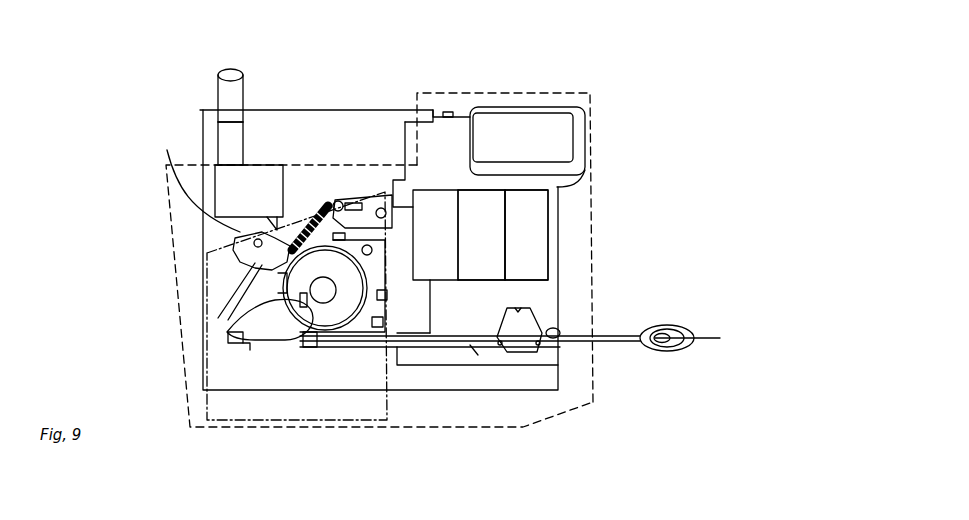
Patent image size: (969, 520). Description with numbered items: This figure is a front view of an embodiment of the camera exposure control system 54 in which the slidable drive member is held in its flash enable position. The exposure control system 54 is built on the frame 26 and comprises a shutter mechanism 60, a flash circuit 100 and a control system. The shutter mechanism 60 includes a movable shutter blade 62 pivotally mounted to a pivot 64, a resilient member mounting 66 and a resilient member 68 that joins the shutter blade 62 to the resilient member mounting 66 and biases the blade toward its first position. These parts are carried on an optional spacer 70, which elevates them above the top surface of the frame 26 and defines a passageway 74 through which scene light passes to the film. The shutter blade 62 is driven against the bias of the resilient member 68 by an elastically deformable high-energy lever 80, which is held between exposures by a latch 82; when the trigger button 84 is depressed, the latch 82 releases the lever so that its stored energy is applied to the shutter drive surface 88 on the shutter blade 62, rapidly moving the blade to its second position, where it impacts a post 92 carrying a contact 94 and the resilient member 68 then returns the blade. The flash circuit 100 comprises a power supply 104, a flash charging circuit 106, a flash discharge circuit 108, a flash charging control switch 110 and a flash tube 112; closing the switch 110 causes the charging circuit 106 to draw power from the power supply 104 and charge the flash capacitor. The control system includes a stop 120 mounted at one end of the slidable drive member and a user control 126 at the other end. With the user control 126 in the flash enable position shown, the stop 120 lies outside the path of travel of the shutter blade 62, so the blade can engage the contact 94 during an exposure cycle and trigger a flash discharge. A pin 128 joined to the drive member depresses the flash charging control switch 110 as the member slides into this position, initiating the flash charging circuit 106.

The frame 26 is at (452, 377).
The exposure control system 54 is at (667, 93).
The shutter mechanism 60 is at (293, 423).
The shutter blade 62 is at (265, 301).
The pivot 64 is at (206, 254).
The resilient member mounting 66 is at (383, 207).
The resilient member 68 is at (332, 200).
The spacer 70 is at (224, 238).
The passageway 74 is at (332, 282).
The high-energy lever 80 is at (260, 201).
The latch 82 is at (242, 152).
The trigger button 84 is at (242, 109).
The shutter drive surface 88 is at (199, 179).
The post 92 is at (228, 343).
The contact 94 is at (243, 350).
The flash circuit 100 is at (500, 93).
The power supply 104 is at (542, 249).
The flash charging circuit 106 is at (497, 249).
The flash discharge circuit 108 is at (450, 249).
The flash charging control switch 110 is at (527, 350).
The flash tube 112 is at (538, 149).
The stop 120 is at (307, 345).
The user control 126 is at (532, 338).
The pin 128 is at (560, 327).